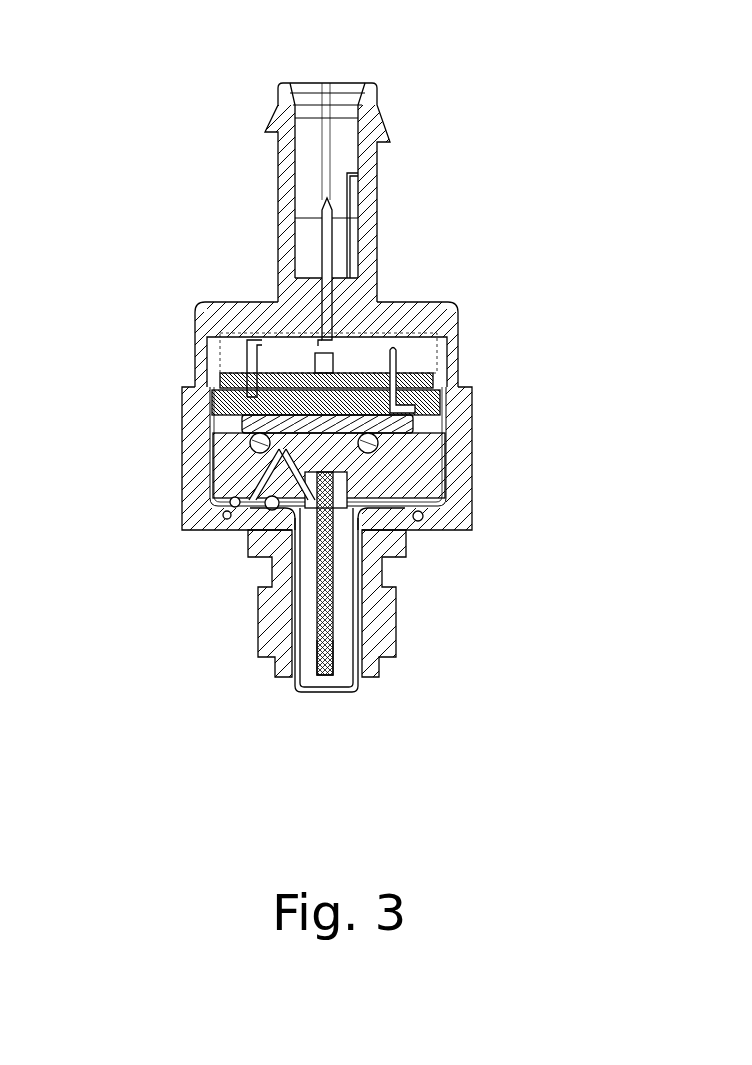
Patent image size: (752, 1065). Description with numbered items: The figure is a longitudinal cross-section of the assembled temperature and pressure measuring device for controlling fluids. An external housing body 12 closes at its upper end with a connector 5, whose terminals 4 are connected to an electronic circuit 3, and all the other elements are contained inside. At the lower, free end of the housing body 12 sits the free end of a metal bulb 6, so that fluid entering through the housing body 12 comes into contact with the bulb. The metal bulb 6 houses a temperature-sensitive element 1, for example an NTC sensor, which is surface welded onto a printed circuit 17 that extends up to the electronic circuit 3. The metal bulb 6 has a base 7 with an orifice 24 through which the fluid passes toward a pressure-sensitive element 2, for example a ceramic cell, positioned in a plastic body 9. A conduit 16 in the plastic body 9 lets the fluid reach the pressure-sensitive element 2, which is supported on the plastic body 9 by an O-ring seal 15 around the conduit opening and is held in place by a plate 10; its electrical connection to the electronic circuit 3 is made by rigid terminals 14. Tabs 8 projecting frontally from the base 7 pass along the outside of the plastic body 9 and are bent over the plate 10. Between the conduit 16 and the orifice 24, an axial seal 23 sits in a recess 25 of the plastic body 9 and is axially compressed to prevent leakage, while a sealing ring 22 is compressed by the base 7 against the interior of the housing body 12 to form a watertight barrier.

The temperature-sensitive element 1 is at (338, 647).
The pressure-sensitive element 2 is at (250, 423).
The electronic circuit 3 is at (417, 378).
The terminals 4 is at (325, 248).
The connector 5 is at (286, 170).
The metal bulb 6 is at (298, 628).
The base 7 is at (380, 510).
The tabs 8 is at (443, 453).
The plastic body 9 is at (397, 475).
The plate 10 is at (428, 403).
The external housing body 12 is at (277, 622).
The rigid terminals 14 is at (393, 350).
The O-ring seal 15 is at (253, 442).
The conduit 16 is at (263, 477).
The printed circuit 17 is at (323, 607).
The sealing ring 22 is at (418, 518).
The axial seal 23 is at (245, 507).
The orifice 24 is at (253, 510).
The recess 25 is at (255, 503).